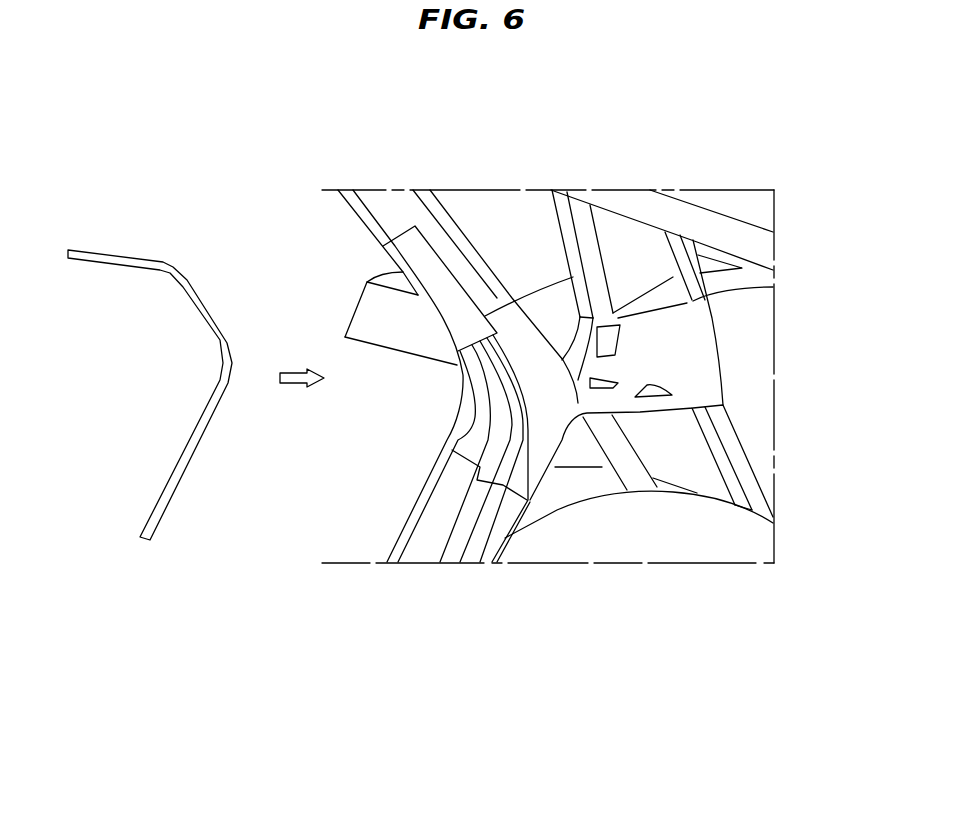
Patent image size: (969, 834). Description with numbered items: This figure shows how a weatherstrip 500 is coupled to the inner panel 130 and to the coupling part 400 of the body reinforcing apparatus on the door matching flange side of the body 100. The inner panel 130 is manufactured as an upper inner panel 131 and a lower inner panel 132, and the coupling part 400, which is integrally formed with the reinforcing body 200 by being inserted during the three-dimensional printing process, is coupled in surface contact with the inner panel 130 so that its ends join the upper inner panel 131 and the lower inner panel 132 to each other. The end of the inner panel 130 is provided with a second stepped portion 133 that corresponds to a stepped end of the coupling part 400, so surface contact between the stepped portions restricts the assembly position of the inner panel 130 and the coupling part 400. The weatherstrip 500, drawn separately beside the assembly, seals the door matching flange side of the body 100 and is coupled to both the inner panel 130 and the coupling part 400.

The body 100 is at (397, 181).
The inner panel 130 is at (562, 441).
The upper inner panel 131 is at (432, 268).
The lower inner panel 132 is at (430, 542).
The second stepped portion 133 is at (467, 323).
The reinforcing body 200 is at (690, 360).
The coupling part 400 is at (460, 428).
The weatherstrip 500 is at (165, 497).